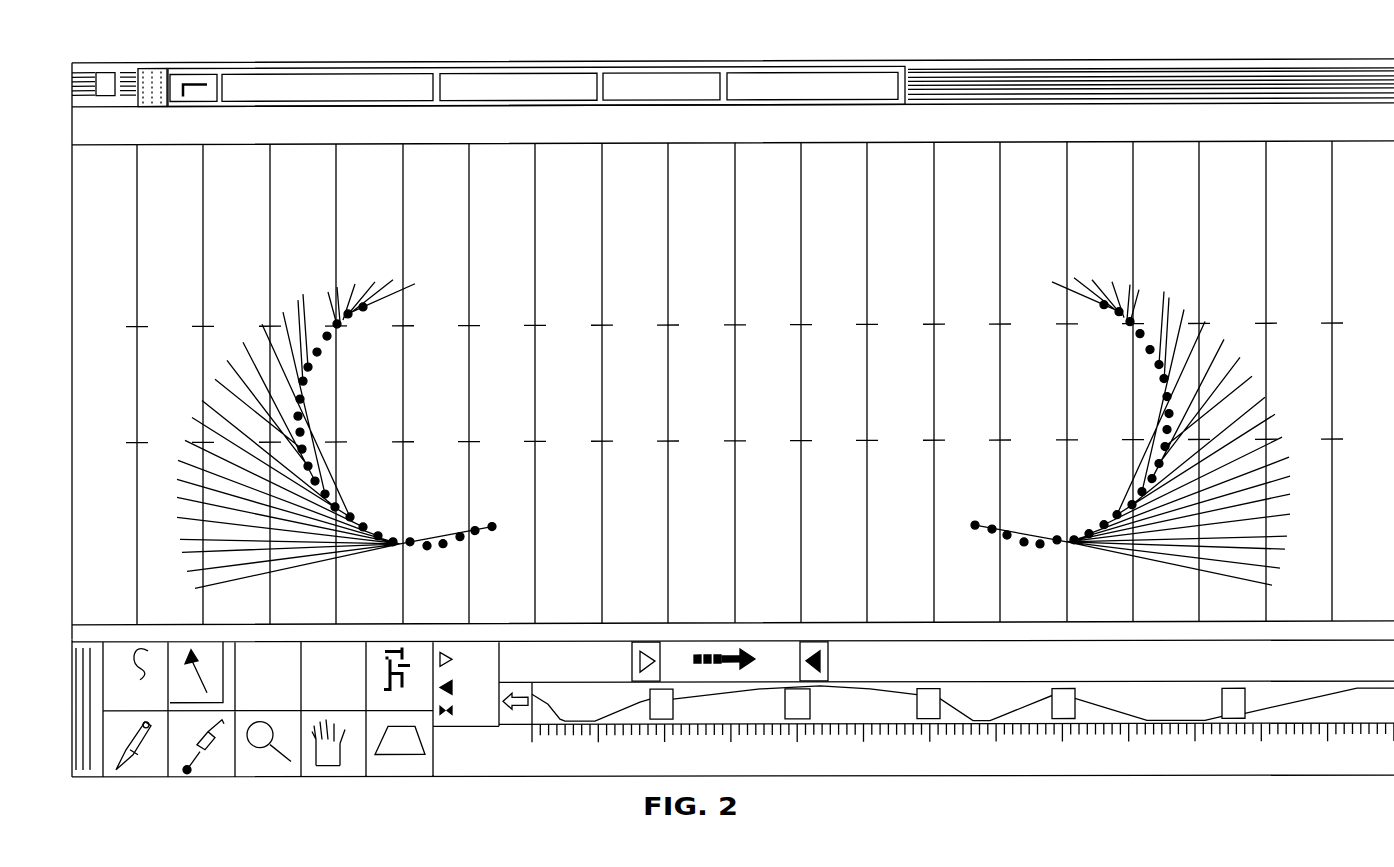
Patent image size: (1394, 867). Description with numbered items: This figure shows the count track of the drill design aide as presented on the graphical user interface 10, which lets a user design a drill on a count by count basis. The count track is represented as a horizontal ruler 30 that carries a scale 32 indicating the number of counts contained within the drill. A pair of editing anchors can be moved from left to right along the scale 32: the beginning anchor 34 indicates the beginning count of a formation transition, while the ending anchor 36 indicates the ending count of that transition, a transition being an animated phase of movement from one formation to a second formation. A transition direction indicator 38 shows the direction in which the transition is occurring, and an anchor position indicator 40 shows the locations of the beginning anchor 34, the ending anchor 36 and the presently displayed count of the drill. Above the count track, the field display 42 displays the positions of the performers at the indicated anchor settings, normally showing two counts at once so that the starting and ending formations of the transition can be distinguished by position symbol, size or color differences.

The graphical user interface 10 is at (215, 50).
The horizontal ruler 30 is at (1143, 790).
The scale 32 is at (635, 760).
The beginning anchor 34 is at (632, 660).
The ending anchor 36 is at (830, 662).
The transition direction indicator 38 is at (727, 667).
The anchor position indicator 40 is at (490, 727).
The field display 42 is at (1168, 267).